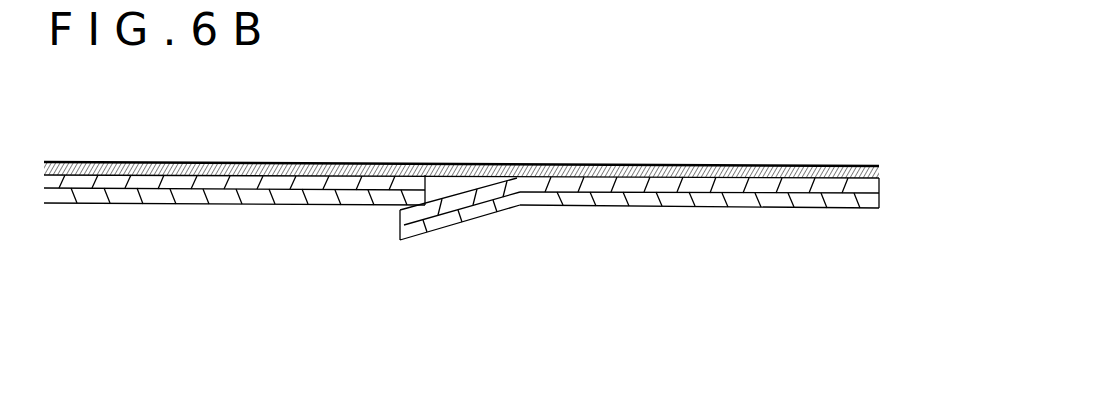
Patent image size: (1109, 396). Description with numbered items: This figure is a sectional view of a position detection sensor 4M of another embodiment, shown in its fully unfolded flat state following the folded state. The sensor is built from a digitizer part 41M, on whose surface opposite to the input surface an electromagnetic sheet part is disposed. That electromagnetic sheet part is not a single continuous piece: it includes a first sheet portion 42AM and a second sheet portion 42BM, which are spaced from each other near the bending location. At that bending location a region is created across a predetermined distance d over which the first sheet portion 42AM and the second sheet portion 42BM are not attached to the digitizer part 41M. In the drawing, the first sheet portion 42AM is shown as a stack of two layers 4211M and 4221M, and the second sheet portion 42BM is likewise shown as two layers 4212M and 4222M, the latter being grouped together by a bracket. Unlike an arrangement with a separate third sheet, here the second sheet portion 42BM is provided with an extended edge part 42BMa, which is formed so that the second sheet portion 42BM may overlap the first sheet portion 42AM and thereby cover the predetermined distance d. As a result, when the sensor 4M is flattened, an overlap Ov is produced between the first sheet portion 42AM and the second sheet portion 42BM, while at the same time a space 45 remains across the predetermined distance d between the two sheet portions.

The position detection sensor 4M is at (499, 210).
The digitizer part 41M is at (662, 170).
The first sheet portion 42AM is at (234, 258).
The first layer of first portion 4211M is at (91, 197).
The second layer of first portion 4221M is at (68, 182).
The second sheet portion 42BM is at (677, 244).
The first layer of second portion 4212M is at (700, 200).
The second layer of second portion 4222M is at (665, 183).
The extended edge part 42BMa is at (452, 228).
The space 45 is at (440, 190).
The predetermined distance d is at (425, 175).
The overlap Ov is at (400, 242).